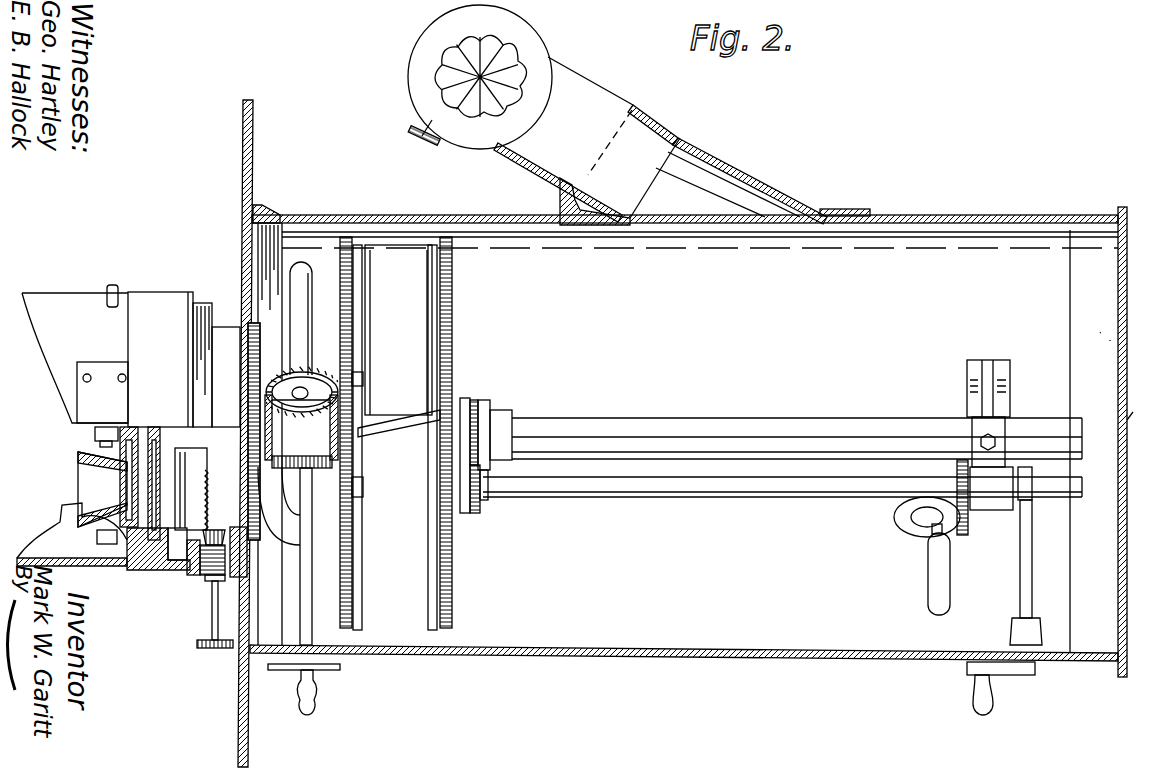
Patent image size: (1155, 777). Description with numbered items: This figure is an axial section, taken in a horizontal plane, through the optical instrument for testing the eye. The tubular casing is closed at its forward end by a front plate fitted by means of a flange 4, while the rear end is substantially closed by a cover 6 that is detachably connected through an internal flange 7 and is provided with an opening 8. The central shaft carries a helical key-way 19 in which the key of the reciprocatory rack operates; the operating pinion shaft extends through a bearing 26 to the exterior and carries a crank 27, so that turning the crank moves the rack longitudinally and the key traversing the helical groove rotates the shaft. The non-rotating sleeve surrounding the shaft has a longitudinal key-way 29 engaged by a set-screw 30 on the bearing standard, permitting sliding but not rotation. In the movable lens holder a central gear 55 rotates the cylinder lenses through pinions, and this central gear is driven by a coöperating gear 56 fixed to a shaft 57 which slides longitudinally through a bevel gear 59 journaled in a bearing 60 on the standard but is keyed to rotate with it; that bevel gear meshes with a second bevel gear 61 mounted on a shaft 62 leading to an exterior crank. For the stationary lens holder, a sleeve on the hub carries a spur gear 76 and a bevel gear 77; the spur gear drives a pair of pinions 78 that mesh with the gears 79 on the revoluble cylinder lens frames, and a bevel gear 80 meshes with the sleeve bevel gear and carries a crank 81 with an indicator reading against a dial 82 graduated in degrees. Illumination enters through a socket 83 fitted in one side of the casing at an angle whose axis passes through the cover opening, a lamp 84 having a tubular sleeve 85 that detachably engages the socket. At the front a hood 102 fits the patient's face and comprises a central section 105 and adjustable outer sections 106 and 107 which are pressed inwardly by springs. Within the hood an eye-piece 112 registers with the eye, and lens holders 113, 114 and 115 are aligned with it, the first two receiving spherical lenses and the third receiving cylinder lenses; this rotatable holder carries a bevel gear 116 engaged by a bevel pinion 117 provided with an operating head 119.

The flange 4 is at (272, 222).
The cover 6 is at (1095, 481).
The internal flange 7 is at (1084, 441).
The opening 8 is at (1136, 417).
The helical key-way 19 is at (380, 430).
The bearing 26 is at (1010, 627).
The crank 27 is at (995, 690).
The longitudinal key-way 29 is at (705, 438).
The set-screw 30 is at (972, 425).
The central gear 55 is at (475, 405).
The coöperating gear 56 is at (472, 515).
The shaft 57 is at (605, 486).
The bevel gear 59 is at (957, 470).
The bearing 60 is at (1001, 488).
The bevel gear 61 is at (895, 518).
The shaft 62 is at (922, 538).
The spur gear 76 is at (352, 408).
The bevel gear 77 is at (301, 365).
The pinions 78 is at (358, 380).
The gears 79 is at (350, 356).
The bevel gear 80 is at (313, 513).
The crank 81 is at (317, 694).
The dial 82 is at (345, 667).
The socket 83 is at (749, 164).
The lamp 84 is at (480, 77).
The tubular sleeve 85 is at (563, 141).
The hood 102 is at (184, 359).
The central section 105 is at (102, 392).
The outer section 106 is at (75, 354).
The outer section 107 is at (72, 534).
The eye-piece 112 is at (119, 485).
The lens holder 113 is at (160, 568).
The lens holder 114 is at (178, 572).
The lens holder 115 is at (197, 578).
The bevel gear 116 is at (208, 489).
The bevel pinion 117 is at (216, 536).
The operating head 119 is at (213, 652).